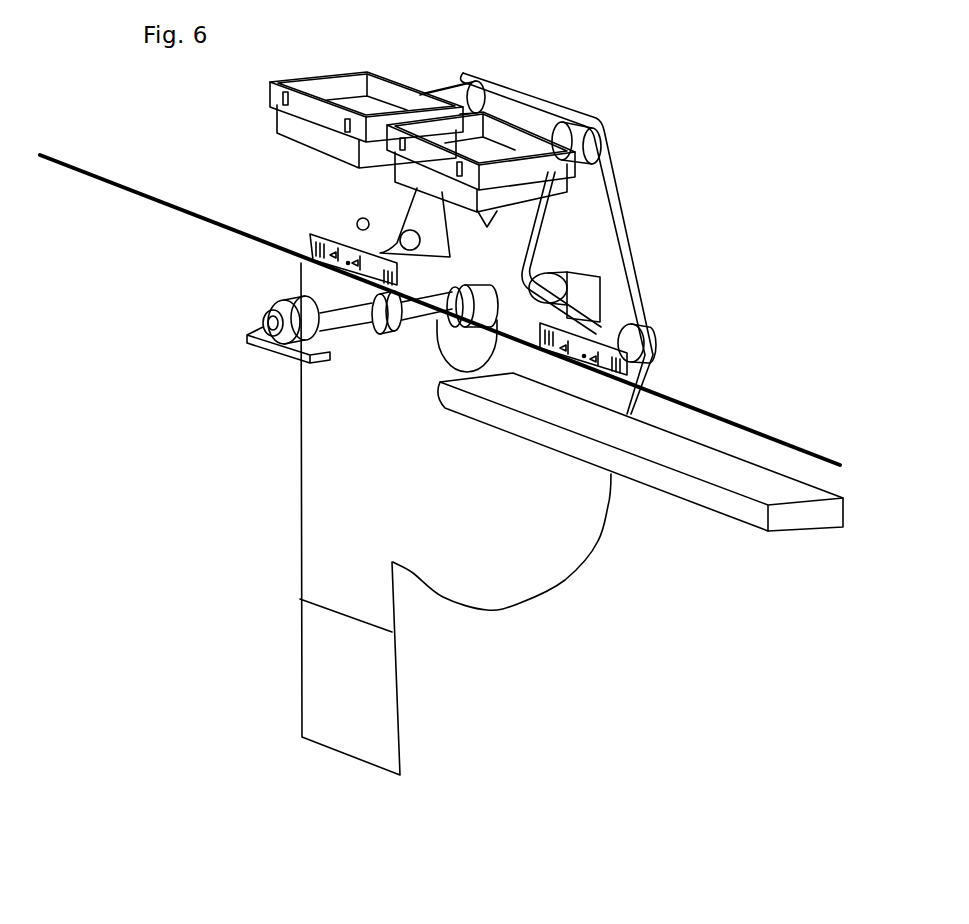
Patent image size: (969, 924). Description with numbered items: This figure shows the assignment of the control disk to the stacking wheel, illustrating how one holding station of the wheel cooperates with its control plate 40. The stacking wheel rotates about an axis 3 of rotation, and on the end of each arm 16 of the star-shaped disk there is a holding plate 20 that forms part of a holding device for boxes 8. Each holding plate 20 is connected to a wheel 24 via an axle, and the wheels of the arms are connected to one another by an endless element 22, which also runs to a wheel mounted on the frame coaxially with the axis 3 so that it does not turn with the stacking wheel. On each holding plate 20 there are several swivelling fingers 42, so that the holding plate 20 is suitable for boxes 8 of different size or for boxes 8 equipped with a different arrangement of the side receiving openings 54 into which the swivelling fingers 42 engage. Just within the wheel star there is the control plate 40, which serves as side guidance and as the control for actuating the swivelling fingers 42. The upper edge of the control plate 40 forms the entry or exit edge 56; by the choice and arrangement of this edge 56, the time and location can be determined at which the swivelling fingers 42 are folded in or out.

The axis of rotation 3 is at (247, 333).
The box 8 is at (270, 80).
The arm 16 is at (523, 233).
The holding plate 20 is at (302, 263).
The endless element 22 is at (628, 232).
The wheel 24 is at (602, 165).
The control plate 40 is at (567, 578).
The swivelling finger 42 is at (310, 243).
The side receiving opening 54 is at (268, 112).
The entry or exit edge 56 is at (753, 427).